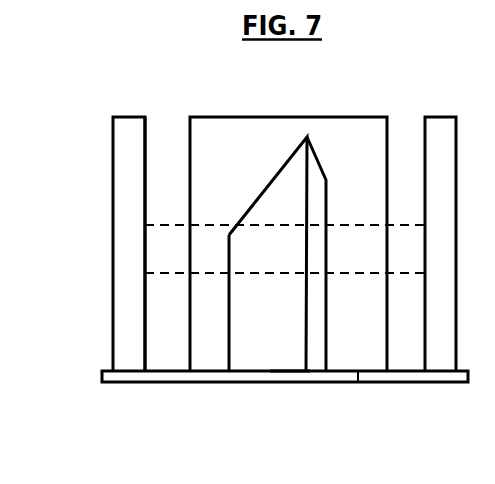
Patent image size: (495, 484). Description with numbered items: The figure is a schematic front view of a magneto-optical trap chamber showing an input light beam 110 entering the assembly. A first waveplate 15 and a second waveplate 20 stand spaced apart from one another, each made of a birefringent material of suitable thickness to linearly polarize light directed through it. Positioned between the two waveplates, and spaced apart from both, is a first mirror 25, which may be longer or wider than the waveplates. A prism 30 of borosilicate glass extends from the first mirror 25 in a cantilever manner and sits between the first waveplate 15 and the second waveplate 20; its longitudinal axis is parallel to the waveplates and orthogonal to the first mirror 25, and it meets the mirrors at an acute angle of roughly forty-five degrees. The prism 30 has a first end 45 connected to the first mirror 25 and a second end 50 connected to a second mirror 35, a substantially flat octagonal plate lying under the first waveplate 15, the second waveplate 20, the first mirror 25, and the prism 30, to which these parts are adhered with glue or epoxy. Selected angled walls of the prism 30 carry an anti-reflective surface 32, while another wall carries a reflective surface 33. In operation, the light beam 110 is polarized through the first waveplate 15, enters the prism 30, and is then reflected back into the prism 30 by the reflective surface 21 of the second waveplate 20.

The first waveplate 15 is at (448, 199).
The second waveplate 20 is at (118, 200).
The reflective surface 21 is at (113, 168).
The first mirror 25 is at (354, 131).
The prism 30 is at (238, 342).
The anti-reflective surface 32 is at (320, 207).
The reflective surface 33 is at (287, 320).
The second mirror 35 is at (404, 383).
The first end 45 is at (292, 148).
The second end 50 is at (291, 372).
The light beam 110 is at (167, 265).